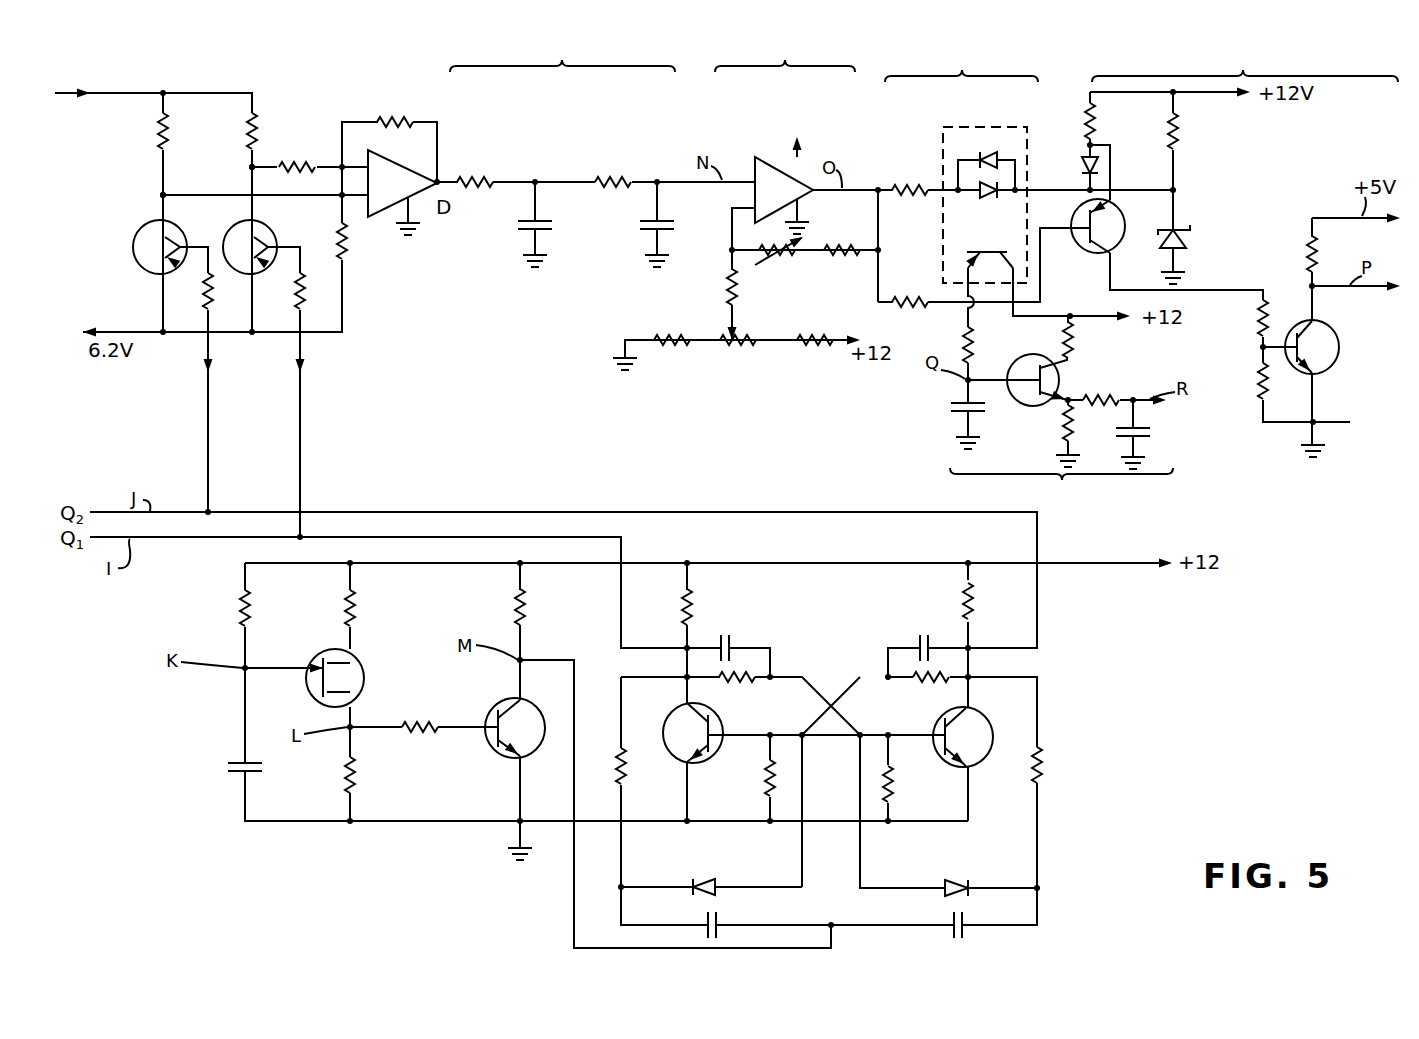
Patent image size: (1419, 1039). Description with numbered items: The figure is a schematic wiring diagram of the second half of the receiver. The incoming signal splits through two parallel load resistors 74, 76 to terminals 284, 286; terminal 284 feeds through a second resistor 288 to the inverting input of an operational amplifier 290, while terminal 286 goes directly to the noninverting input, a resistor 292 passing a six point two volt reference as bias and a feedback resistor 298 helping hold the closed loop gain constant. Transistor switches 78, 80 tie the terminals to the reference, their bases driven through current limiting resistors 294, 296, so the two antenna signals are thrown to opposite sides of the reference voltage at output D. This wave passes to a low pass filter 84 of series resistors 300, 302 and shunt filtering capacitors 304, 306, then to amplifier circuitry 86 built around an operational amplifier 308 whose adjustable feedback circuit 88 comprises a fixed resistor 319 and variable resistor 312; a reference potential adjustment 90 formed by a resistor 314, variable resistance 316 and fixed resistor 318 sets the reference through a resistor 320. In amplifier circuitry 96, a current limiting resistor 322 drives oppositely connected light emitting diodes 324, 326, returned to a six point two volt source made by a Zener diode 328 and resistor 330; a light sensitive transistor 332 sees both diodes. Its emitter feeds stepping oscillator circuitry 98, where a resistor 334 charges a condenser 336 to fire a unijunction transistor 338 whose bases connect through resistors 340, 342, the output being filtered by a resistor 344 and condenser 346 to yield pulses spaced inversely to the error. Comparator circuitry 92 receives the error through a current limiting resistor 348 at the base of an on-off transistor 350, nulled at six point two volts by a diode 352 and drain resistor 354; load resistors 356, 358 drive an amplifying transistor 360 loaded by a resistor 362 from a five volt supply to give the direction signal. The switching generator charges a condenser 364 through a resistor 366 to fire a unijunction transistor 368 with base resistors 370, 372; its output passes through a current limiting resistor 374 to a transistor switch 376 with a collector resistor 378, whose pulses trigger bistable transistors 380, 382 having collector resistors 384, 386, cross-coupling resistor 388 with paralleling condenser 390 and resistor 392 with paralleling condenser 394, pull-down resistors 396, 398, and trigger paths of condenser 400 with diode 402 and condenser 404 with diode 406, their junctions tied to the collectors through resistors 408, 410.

The load resistor 74 is at (257, 124).
The load resistor 76 is at (158, 122).
The transistor switch 78 is at (146, 232).
The transistor switch 80 is at (265, 232).
The low pass filter 84 is at (562, 56).
The operational amplifier circuitry 86 is at (785, 56).
The adjustable feedback circuit 88 is at (826, 236).
The reference potential adjustment 90 is at (698, 318).
The comparator circuitry 92 is at (1245, 61).
The amplifier circuitry 96 is at (961, 61).
The stepping oscillator circuitry 98 is at (1061, 487).
The terminal 284 is at (250, 166).
The terminal 286 is at (162, 193).
The second resistor 288 is at (297, 160).
The operational amplifier 290 is at (397, 165).
The resistor 292 is at (348, 244).
The current limiting resistor 294 is at (203, 300).
The current limiting resistor 296 is at (305, 298).
The feedback resistor 298 is at (394, 117).
The resistor 300 is at (470, 174).
The resistor 302 is at (608, 174).
The filtering capacitor 304 is at (553, 222).
The filtering capacitor 306 is at (675, 222).
The operational amplifier 308 is at (768, 160).
The variable resistor 312 is at (770, 262).
The resistor 314 is at (685, 348).
The variable resistance 316 is at (733, 350).
The fixed resistor 318 is at (810, 350).
The fixed resistor 319 is at (850, 262).
The resistor 320 is at (727, 290).
The current limiting resistor 322 is at (906, 180).
The light emitting diode 324 is at (1003, 183).
The light emitting diode 326 is at (976, 155).
The Zener diode 328 is at (1182, 230).
The resistor 330 is at (1180, 132).
The light sensitive transistor 332 is at (1000, 250).
The resistor 334 is at (975, 346).
The condenser 336 is at (951, 405).
The unijunction transistor 338 is at (1025, 406).
The resistor 340 is at (1075, 345).
The resistor 342 is at (1062, 430).
The resistor 344 is at (1108, 394).
The condenser 346 is at (1141, 438).
The current limiting resistor 348 is at (910, 305).
The on-off transistor 350 is at (1120, 219).
The diode 352 is at (1100, 169).
The drain resistor 354 is at (1098, 128).
The load resistor 356 is at (1268, 300).
The load resistor 358 is at (1261, 402).
The amplifying transistor 360 is at (1340, 345).
The load resistor 362 is at (1318, 252).
The condenser 364 is at (228, 768).
The resistor 366 is at (240, 600).
The unijunction transistor 368 is at (360, 665).
The resistor 370 is at (355, 600).
The resistor 372 is at (358, 775).
The current limiting resistor 374 is at (420, 722).
The transistor switch 376 is at (505, 760).
The resistor 378 is at (528, 605).
The transistor 380 is at (680, 712).
The transistor 382 is at (975, 712).
The resistor 384 is at (695, 605).
The resistor 386 is at (975, 605).
The resistor 388 is at (920, 688).
The condenser 390 is at (916, 645).
The resistor 392 is at (748, 688).
The condenser 394 is at (733, 645).
The resistor 396 is at (762, 780).
The resistor 398 is at (898, 785).
The condenser 400 is at (722, 920).
The diode 402 is at (690, 880).
The condenser 404 is at (967, 935).
The diode 406 is at (968, 878).
The resistor 408 is at (628, 775).
The resistor 410 is at (1045, 780).